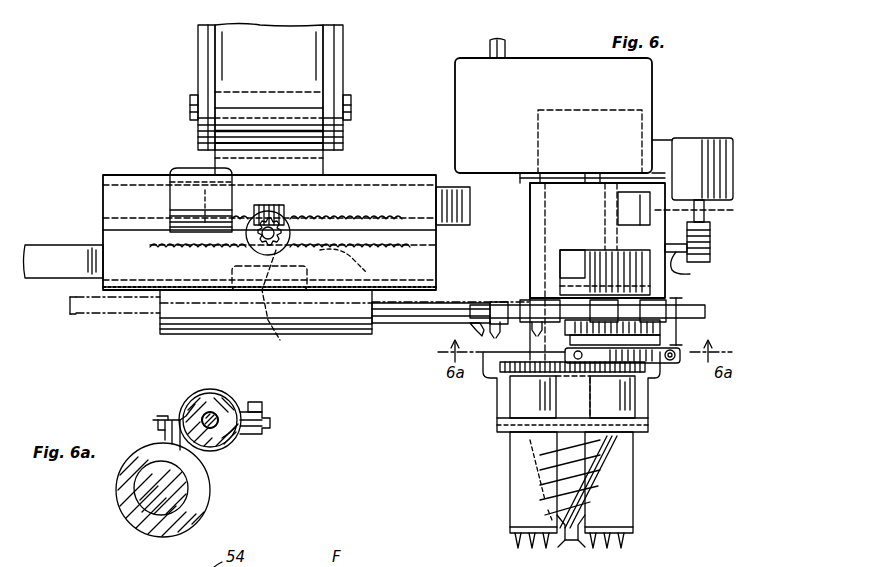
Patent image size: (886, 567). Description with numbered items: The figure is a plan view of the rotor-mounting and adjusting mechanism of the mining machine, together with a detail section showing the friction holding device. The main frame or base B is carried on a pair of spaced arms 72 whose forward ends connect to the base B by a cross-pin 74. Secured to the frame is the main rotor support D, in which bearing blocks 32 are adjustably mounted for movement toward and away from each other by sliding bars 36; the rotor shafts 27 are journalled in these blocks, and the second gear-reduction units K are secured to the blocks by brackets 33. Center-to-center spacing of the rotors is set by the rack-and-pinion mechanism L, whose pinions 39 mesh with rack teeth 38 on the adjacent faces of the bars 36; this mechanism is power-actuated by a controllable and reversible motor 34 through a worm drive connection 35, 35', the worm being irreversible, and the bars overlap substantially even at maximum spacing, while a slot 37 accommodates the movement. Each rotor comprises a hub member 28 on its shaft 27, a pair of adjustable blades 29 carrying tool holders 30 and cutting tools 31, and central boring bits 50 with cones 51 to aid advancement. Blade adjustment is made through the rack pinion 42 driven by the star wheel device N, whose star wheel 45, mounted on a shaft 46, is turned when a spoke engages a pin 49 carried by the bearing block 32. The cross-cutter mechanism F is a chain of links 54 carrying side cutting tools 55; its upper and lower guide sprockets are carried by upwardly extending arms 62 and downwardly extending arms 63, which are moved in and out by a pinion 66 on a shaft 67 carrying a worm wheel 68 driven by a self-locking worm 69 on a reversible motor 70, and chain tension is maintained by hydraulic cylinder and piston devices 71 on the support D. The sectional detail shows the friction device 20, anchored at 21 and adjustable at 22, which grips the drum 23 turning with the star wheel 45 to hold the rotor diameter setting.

In FIG. 6, the main frame or base B is at (300, 46).
In FIG. 6, the spaced arms 72 is at (202, 47).
In FIG. 6, the cross-pin 74 is at (351, 107).
In FIG. 6, the main rotor support D is at (103, 222).
In FIG. 6, the sliding bars 36 is at (48, 270).
In FIG. 6, the controllable and reversible motor 34 is at (180, 168).
In FIG. 6, the pinions 39 is at (232, 246).
In FIG. 6, the worm 35 is at (300, 204).
In FIG. 6, the worm wheel 35' is at (302, 210).
In FIG. 6, the slot 37 is at (378, 195).
In FIG. 6, the rack teeth 38 is at (359, 261).
In FIG. 6, the hydraulic cylinder and piston devices 71 is at (338, 332).
In FIG. 6, the rack-and-pinion mechanism L is at (283, 301).
In FIG. 6, the cross-cutter mechanism F is at (92, 315).
In FIG. 6, the links 54 is at (490, 304).
In FIG. 6, the side cutting tools 55 is at (470, 326).
In FIG. 6, the second gear-reduction units K is at (535, 58).
In FIG. 6, the brackets 33 is at (645, 110).
In FIG. 6, the bearing supports or blocks 32 is at (665, 280).
In FIG. 6, the rotor shafts 27 is at (543, 242).
In FIG. 6a, the rotor shafts 27 is at (148, 492).
In FIG. 6, the downwardly extending arms 63 is at (618, 200).
In FIG. 6, the upwardly extending arms 62 is at (592, 255).
In FIG. 6, the controllable and reversible motors 70 is at (733, 178).
In FIG. 6, the pinion 66 is at (706, 211).
In FIG. 6, the worms 69 is at (712, 240).
In FIG. 6, the worm wheels 68 is at (710, 258).
In FIG. 6, the shafts 67 is at (690, 274).
In FIG. 6, the pin 49 is at (660, 313).
In FIG. 6, the star wheel device N is at (650, 335).
In FIG. 6, the star wheel 45 is at (680, 352).
In FIG. 6, the hub member 28 is at (650, 408).
In FIG. 6, the rack pinion 42 is at (615, 410).
In FIG. 6, the adjustable arms or blades 29 is at (510, 399).
In FIG. 6, the tool holders 30 is at (646, 530).
In FIG. 6, the cutting tools 31 is at (512, 538).
In FIG. 6, the central boring bits 50 is at (575, 546).
In FIG. 6, the cones 51 is at (610, 487).
In FIG. 6a, the friction device 20 is at (208, 390).
In FIG. 6a, the anchor 21 is at (160, 416).
In FIG. 6a, the shaft 46 is at (218, 412).
In FIG. 6a, the adjustment 22 is at (270, 420).
In FIG. 6a, the drum 23 is at (222, 438).